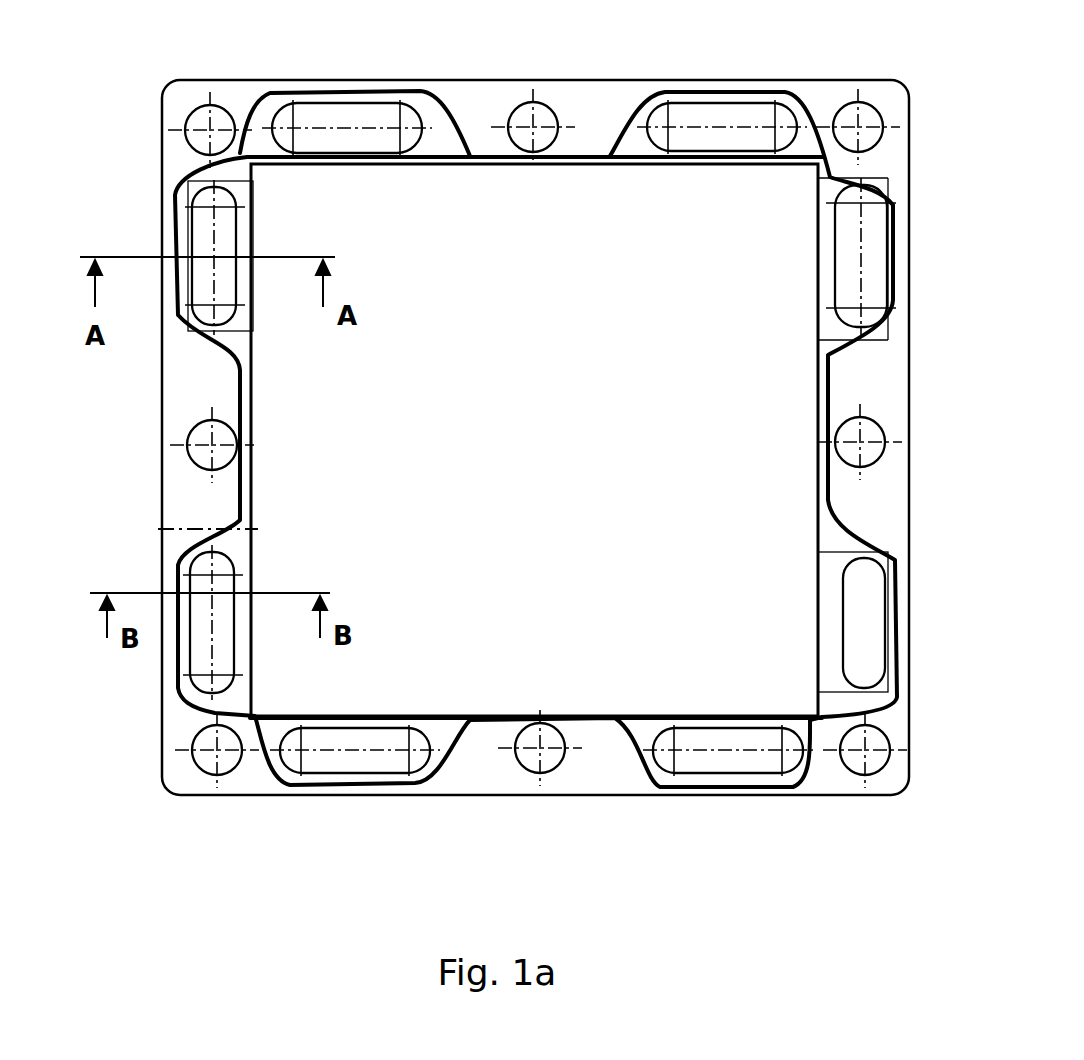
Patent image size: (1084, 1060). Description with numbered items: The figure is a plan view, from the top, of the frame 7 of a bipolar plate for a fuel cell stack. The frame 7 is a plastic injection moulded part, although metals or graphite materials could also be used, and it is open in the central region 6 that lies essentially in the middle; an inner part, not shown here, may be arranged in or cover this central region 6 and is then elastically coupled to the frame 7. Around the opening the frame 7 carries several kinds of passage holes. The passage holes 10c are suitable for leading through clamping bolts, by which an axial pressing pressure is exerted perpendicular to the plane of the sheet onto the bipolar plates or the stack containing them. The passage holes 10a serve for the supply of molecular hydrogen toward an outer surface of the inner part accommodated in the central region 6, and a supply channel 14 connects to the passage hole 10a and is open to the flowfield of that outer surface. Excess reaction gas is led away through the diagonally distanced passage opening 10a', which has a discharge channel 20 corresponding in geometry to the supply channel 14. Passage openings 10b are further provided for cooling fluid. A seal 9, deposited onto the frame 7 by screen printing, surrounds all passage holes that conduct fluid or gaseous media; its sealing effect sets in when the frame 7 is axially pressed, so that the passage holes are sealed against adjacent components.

The central region 6 is at (627, 610).
The frame 7 is at (607, 777).
The seal 9 is at (203, 710).
The passage hole 10a is at (159, 290).
The passage opening 10a' is at (892, 709).
The passage opening 10b is at (203, 648).
The passage hole 10c is at (540, 118).
The supply channel 14 is at (240, 295).
The discharge channel 20 is at (833, 630).